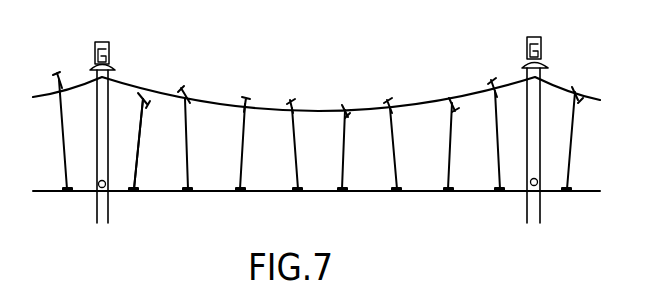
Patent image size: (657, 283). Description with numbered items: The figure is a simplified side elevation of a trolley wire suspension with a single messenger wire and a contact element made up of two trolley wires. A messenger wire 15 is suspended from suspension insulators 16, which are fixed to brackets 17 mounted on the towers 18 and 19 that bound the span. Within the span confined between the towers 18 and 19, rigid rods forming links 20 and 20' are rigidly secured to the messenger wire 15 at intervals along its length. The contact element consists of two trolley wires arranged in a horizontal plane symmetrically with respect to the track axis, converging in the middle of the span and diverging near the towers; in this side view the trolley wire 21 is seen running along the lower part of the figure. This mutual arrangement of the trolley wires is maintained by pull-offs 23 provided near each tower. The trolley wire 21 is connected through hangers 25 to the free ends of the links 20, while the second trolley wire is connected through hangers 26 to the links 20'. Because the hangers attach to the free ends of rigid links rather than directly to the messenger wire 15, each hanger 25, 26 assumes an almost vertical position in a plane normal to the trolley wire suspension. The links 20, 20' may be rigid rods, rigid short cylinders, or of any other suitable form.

The messenger wire 15 is at (222, 102).
The suspension insulators 16 is at (113, 68).
The brackets 17 is at (98, 51).
The tower 18 is at (97, 125).
The tower 19 is at (537, 112).
The links 20 is at (135, 142).
The links 20' is at (200, 79).
The trolley wire 21 is at (320, 193).
The pull-offs 23 is at (106, 188).
The hangers 25 is at (139, 141).
The hangers 26 is at (189, 138).